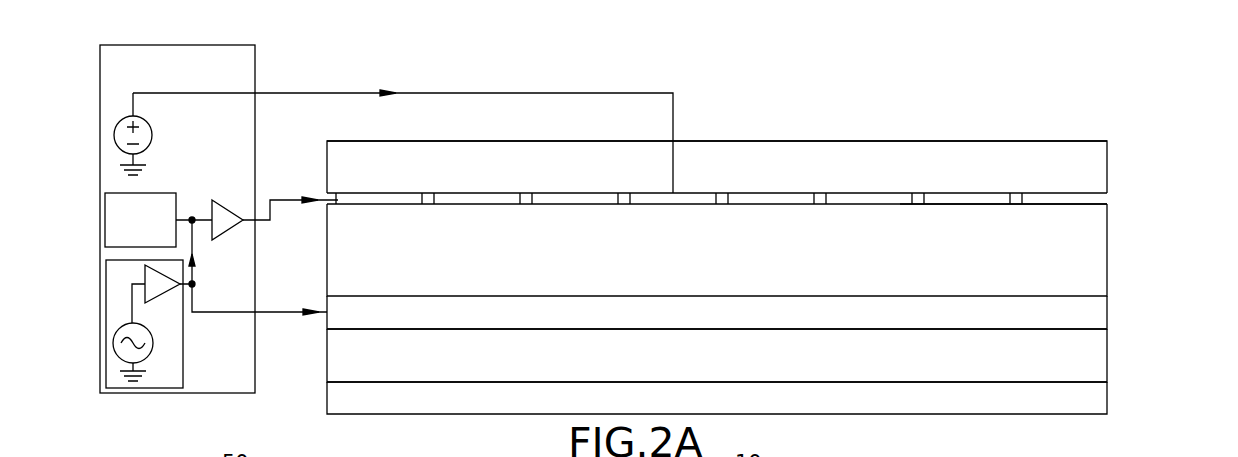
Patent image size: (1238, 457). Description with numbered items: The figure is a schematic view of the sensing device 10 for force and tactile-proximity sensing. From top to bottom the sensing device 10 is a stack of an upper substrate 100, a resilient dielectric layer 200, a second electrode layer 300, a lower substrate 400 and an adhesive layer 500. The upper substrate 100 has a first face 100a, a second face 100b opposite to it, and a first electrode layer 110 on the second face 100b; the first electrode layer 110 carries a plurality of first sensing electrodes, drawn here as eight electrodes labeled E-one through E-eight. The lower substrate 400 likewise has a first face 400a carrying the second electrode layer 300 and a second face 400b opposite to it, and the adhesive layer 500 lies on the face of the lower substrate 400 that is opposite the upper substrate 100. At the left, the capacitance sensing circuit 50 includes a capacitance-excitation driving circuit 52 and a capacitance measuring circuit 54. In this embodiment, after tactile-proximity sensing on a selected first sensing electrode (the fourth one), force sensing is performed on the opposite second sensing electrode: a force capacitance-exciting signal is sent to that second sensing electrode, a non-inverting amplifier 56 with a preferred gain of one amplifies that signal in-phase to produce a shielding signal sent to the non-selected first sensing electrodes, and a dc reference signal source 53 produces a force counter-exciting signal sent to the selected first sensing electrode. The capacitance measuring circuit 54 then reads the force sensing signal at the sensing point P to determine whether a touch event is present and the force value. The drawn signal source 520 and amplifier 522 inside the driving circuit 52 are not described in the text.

The sensing device 10 is at (757, 46).
The capacitance sensing circuit 50 is at (177, 45).
The capacitance-excitation driving circuit 52 is at (106, 310).
The AC signal source 520 is at (113, 342).
The amplifier 522 is at (145, 270).
The dc reference signal source 53 is at (114, 135).
The capacitance measuring circuit 54 is at (105, 220).
The non-inverting amplifier 56 is at (234, 200).
The upper substrate 100 is at (875, 152).
The first face 100a is at (1005, 141).
The second face 100b is at (1016, 205).
The first electrode layer 110 is at (1100, 198).
The resilient dielectric layer 200 is at (1098, 250).
The second electrode layer 300 is at (1098, 312).
The lower substrate 400 is at (1098, 355).
The first face 400a is at (1083, 329).
The second face 400b is at (1083, 382).
The adhesive layer 500 is at (1098, 400).